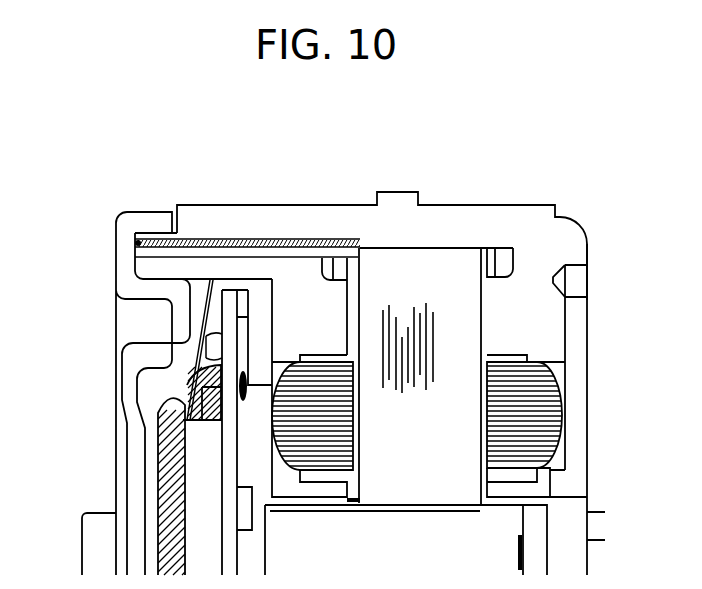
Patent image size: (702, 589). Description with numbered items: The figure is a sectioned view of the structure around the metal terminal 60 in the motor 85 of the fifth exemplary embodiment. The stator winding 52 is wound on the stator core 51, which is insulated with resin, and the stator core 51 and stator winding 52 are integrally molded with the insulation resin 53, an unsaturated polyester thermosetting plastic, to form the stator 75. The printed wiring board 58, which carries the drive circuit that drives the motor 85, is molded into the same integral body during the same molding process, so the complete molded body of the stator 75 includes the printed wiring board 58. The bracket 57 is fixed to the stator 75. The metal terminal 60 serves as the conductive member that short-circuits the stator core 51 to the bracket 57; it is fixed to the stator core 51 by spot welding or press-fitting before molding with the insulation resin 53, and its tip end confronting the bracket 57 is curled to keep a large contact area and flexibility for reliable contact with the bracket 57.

The stator core 51 is at (460, 370).
The stator winding 52 is at (317, 390).
The insulation resin 53 is at (433, 205).
The bracket 57 is at (116, 222).
The printed wiring board 58 is at (228, 432).
The metal terminal 60 is at (255, 242).
The stator 75 is at (525, 220).
The motor 85 is at (587, 332).